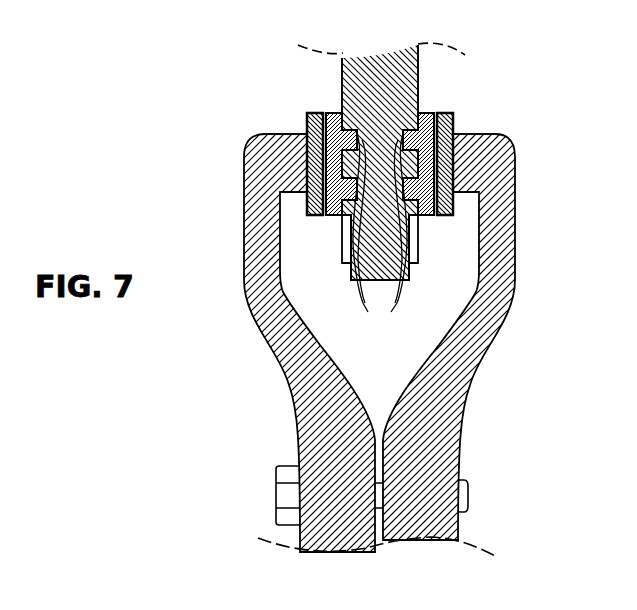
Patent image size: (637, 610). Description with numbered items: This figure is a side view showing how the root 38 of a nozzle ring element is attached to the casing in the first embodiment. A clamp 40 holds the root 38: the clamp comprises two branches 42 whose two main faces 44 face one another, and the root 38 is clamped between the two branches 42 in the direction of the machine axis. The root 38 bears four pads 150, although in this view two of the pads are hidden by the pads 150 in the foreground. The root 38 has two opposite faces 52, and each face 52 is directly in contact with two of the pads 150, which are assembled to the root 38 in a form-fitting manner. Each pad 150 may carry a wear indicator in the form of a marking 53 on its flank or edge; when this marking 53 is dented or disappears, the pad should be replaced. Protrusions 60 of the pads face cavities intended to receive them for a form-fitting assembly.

The root 38 is at (394, 109).
The clamp 40 is at (318, 345).
The branches 42 is at (347, 446).
The main faces 44 is at (282, 245).
The opposite faces 52 is at (337, 89).
The marking 53 is at (303, 158).
The protrusions 60 is at (380, 318).
The pads 150 is at (332, 120).